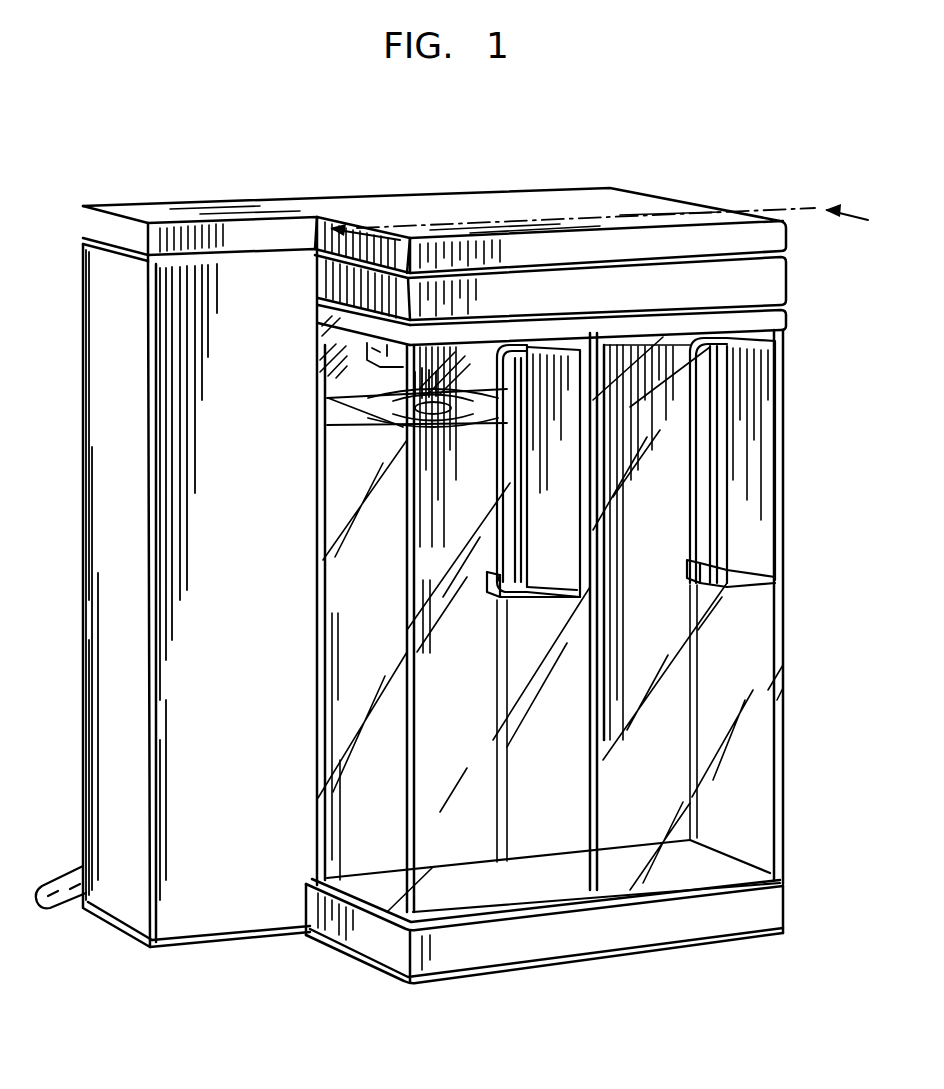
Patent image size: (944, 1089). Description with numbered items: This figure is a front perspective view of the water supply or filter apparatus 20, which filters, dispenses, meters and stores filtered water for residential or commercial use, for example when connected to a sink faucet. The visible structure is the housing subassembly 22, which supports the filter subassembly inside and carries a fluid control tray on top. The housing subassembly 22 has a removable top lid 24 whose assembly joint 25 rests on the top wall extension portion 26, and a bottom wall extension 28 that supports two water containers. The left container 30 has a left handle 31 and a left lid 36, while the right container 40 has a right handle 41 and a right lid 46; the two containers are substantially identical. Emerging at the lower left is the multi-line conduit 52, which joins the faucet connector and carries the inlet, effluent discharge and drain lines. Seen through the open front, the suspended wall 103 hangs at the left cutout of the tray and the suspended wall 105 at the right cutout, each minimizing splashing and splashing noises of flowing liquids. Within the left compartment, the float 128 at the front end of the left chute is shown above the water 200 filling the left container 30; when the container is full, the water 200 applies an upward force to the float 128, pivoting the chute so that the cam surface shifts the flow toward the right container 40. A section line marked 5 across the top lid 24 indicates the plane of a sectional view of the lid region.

The water supply or filter apparatus 20 is at (605, 143).
The housing subassembly 22 is at (172, 488).
The removable top lid 24 is at (244, 207).
The assembly joint 25 is at (101, 206).
The top wall extension portion 26 is at (765, 280).
The bottom wall extension 28 is at (622, 938).
The left container 30 is at (480, 884).
The left handle 31 is at (533, 533).
The left lid 36 is at (343, 320).
The right container 40 is at (713, 862).
The right handle 41 is at (764, 530).
The right lid 46 is at (782, 320).
The multi-line conduit 52 is at (66, 883).
The suspended wall 103 is at (370, 345).
The suspended wall 105 is at (657, 352).
The float 128 is at (434, 378).
The water 200 is at (380, 385).
The section line 5- 5 is at (606, 208).